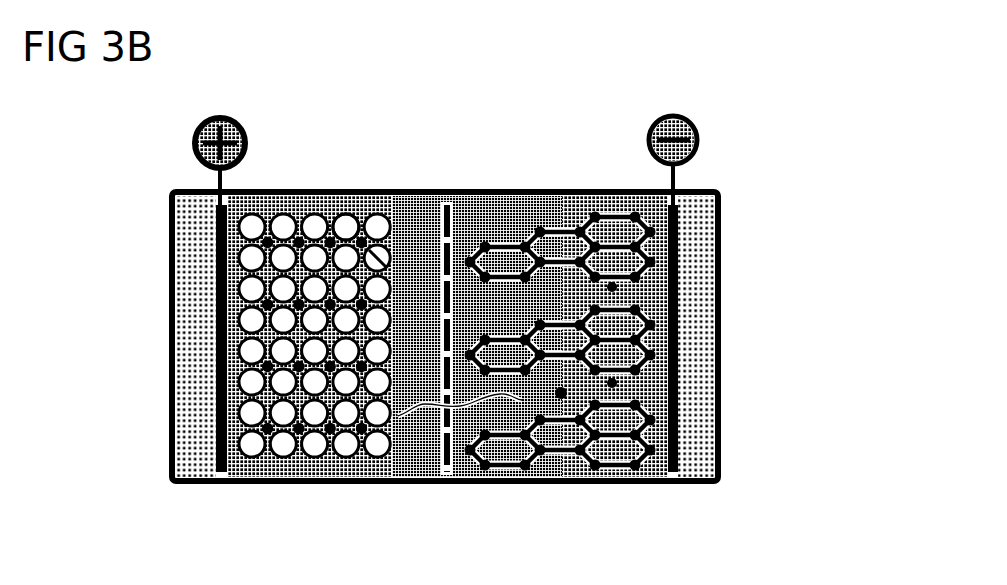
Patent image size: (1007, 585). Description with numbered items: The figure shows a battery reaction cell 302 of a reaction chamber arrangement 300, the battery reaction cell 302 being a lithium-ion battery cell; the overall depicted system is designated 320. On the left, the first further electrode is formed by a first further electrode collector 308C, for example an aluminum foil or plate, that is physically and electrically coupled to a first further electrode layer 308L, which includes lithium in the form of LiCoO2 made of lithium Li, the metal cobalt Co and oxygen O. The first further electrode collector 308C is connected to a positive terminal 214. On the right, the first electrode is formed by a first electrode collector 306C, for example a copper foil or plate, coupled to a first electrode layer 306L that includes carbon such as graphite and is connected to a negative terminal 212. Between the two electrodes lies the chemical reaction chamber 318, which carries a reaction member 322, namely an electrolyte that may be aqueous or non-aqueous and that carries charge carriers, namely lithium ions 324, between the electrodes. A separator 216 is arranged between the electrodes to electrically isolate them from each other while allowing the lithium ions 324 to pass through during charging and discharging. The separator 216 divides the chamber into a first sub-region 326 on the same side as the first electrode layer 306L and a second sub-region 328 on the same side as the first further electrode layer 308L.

The battery cell system 320 is at (808, 78).
The reaction chamber arrangement 300 is at (720, 295).
The positive terminal 214 is at (222, 116).
The negative terminal 212 is at (663, 113).
The first further electrode collector 308C is at (220, 478).
The first further electrode layer 308L is at (282, 456).
The second sub-region 328 is at (355, 212).
The separator 216 is at (453, 212).
The reaction member 322 is at (380, 468).
The lithium ions 324 is at (423, 408).
The chemical reaction chamber 318 is at (547, 212).
The first sub-region 326 is at (612, 212).
The first electrode layer 306L is at (597, 464).
The battery reaction cell 302 is at (508, 476).
The first electrode collector 306C is at (665, 477).
The lithium Li is at (262, 300).
The cobalt Co is at (257, 333).
The oxygen O is at (257, 357).